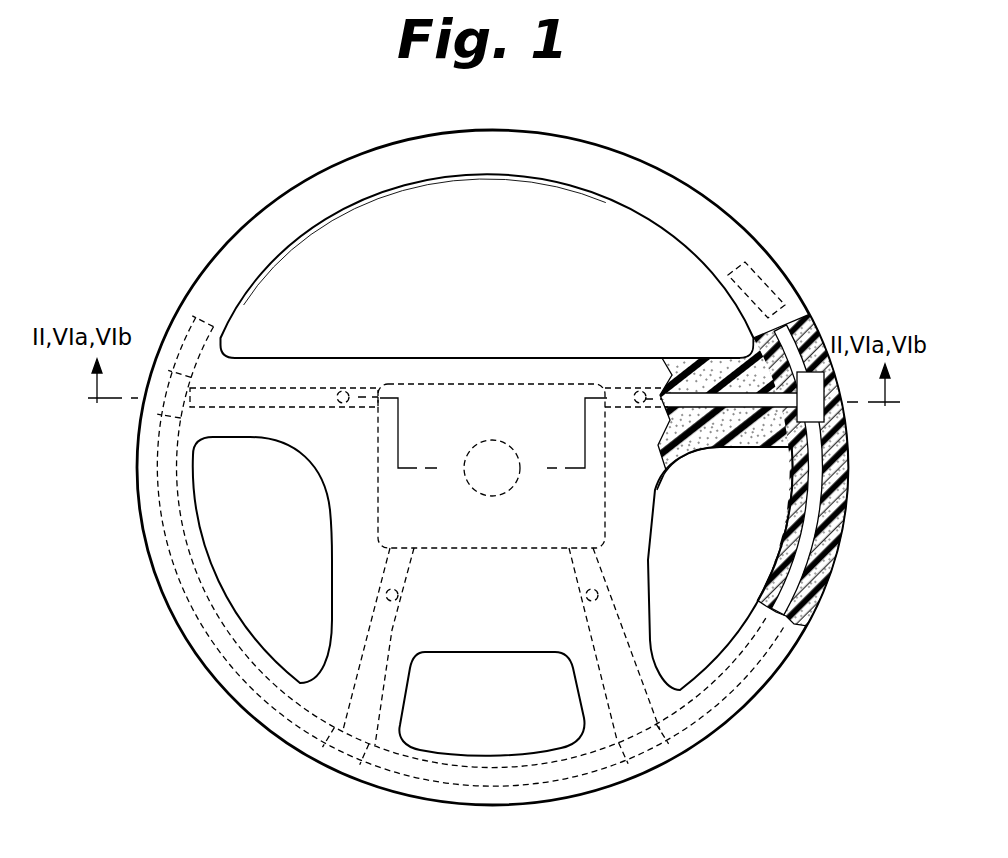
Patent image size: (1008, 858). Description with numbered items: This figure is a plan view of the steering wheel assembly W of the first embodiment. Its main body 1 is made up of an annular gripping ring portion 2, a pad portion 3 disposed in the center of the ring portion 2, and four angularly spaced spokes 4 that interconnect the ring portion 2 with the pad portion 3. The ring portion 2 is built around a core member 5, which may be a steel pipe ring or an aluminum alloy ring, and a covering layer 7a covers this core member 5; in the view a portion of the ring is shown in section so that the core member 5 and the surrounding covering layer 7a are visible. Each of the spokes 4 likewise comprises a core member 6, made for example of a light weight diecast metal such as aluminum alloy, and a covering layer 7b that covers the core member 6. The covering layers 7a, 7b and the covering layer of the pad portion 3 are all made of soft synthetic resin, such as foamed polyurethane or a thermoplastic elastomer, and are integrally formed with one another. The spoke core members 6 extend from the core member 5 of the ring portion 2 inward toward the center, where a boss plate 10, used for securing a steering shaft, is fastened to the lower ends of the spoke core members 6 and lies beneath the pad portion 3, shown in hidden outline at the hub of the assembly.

The steering wheel assembly W is at (686, 157).
The main body 1 is at (716, 213).
The ring portion 2 is at (788, 470).
The pad portion 3 is at (569, 358).
The spokes 4 is at (293, 460).
The core member 5 is at (808, 545).
The core member 6 is at (279, 387).
The covering layer 7a is at (771, 470).
The covering layer 7b is at (755, 440).
The boss plate 10 is at (455, 384).